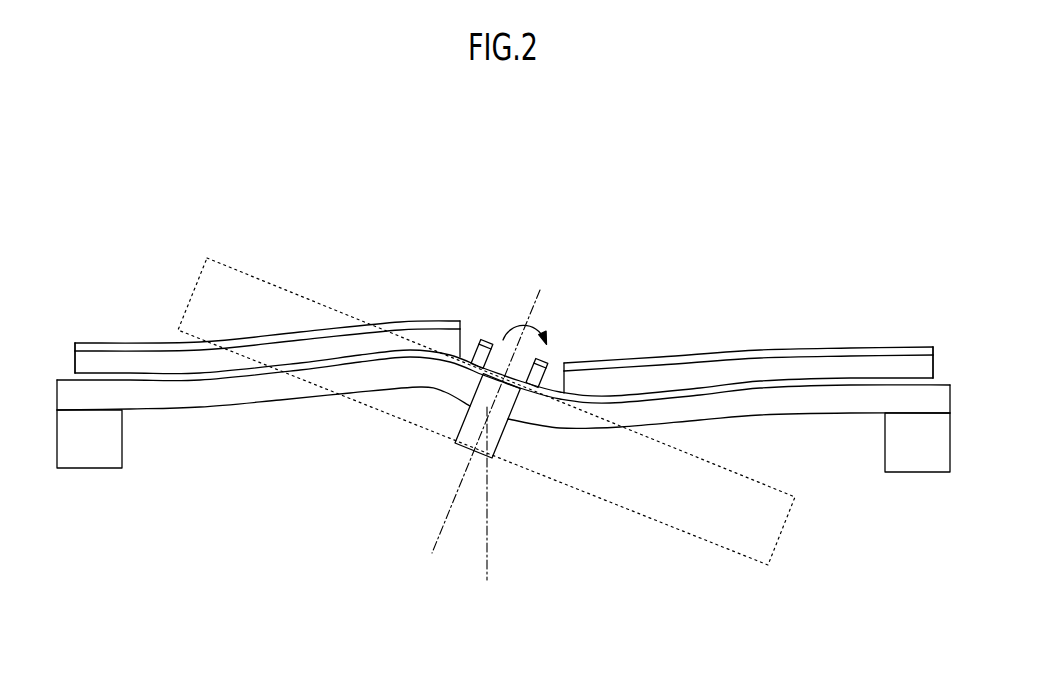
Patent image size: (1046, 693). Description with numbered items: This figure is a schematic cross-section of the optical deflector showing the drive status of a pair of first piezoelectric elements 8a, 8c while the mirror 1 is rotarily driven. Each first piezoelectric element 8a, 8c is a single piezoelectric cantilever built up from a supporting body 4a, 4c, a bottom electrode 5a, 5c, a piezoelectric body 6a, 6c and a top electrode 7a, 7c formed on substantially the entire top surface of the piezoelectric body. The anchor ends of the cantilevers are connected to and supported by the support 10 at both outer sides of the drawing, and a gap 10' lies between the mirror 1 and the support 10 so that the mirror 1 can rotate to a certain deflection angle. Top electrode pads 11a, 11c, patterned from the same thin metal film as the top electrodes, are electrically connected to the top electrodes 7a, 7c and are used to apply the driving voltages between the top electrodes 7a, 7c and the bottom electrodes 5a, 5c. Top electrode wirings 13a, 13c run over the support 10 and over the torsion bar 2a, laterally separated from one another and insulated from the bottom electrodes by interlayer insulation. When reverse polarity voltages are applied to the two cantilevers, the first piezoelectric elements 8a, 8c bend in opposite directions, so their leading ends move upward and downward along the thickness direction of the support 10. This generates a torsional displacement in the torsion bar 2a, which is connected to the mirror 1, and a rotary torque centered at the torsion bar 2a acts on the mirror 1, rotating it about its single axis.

The mirror 1 is at (629, 482).
The torsion bar 2a is at (492, 459).
The supporting body 4a is at (280, 399).
The supporting body 4c is at (823, 412).
The bottom electrode 5a is at (372, 360).
The bottom electrode 5c is at (638, 390).
The piezoelectric body 6a is at (350, 350).
The piezoelectric body 6c is at (620, 378).
The top electrode 7a is at (327, 334).
The top electrode 7c is at (593, 362).
The first piezoelectric element 8a is at (415, 303).
The first piezoelectric element 8c is at (753, 340).
The support 10 is at (503, 470).
The gap 10' is at (242, 490).
The top electrode pad 11a is at (83, 343).
The top electrode pad 11c is at (920, 347).
The top electrode wiring 13a is at (488, 338).
The top electrode wiring 13c is at (541, 358).